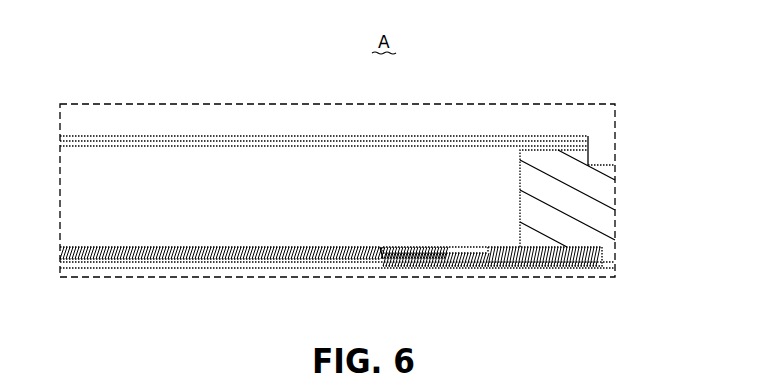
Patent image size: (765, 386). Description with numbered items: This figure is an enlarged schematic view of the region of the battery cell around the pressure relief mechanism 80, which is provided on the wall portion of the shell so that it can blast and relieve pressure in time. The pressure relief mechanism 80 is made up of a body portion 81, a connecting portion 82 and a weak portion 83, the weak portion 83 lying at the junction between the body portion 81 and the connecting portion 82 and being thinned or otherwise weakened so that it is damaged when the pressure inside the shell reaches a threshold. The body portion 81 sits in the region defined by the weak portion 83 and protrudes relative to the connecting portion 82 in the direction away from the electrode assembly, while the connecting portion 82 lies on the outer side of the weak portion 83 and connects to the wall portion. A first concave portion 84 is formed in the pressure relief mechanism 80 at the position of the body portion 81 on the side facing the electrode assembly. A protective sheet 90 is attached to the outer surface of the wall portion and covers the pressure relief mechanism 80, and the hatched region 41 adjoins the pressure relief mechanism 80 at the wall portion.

The protective sheet 90 is at (588, 137).
The sealing member 41 is at (597, 200).
The pressure relief mechanism 80 is at (602, 250).
The first concave portion 84 is at (317, 265).
The body portion 81 is at (360, 262).
The weak portion 83 is at (397, 267).
The connecting portion 82 is at (455, 270).